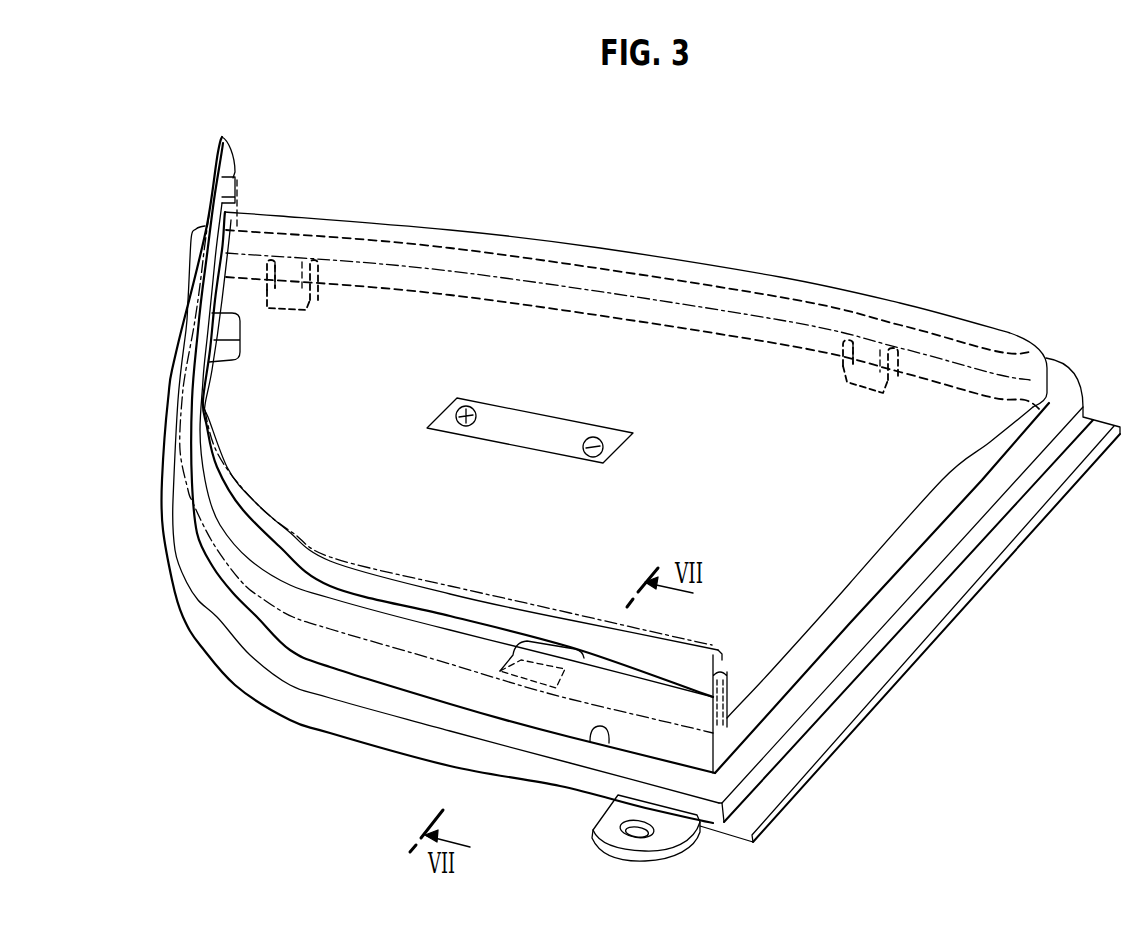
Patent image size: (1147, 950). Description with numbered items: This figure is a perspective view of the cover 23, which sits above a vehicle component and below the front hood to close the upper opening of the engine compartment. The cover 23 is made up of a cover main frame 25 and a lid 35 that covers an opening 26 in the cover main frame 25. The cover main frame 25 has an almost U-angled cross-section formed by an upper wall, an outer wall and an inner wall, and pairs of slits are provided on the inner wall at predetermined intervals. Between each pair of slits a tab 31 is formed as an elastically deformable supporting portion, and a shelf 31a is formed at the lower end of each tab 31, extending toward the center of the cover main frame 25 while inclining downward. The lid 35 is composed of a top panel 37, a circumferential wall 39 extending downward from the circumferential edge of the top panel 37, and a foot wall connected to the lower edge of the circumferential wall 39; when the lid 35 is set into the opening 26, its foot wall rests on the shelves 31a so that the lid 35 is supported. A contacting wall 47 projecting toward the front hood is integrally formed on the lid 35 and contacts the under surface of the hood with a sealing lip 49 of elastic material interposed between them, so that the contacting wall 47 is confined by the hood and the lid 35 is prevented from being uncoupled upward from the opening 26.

The cover 23 is at (678, 214).
The cover main frame 25 is at (427, 717).
The opening 26 is at (590, 738).
The tab 31 is at (293, 273).
The shelf 31a is at (323, 300).
The lid 35 is at (725, 290).
The top panel 37 is at (983, 337).
The circumferential wall 39 is at (1037, 393).
The contacting wall 47 is at (407, 638).
The sealing lip 49 is at (683, 642).